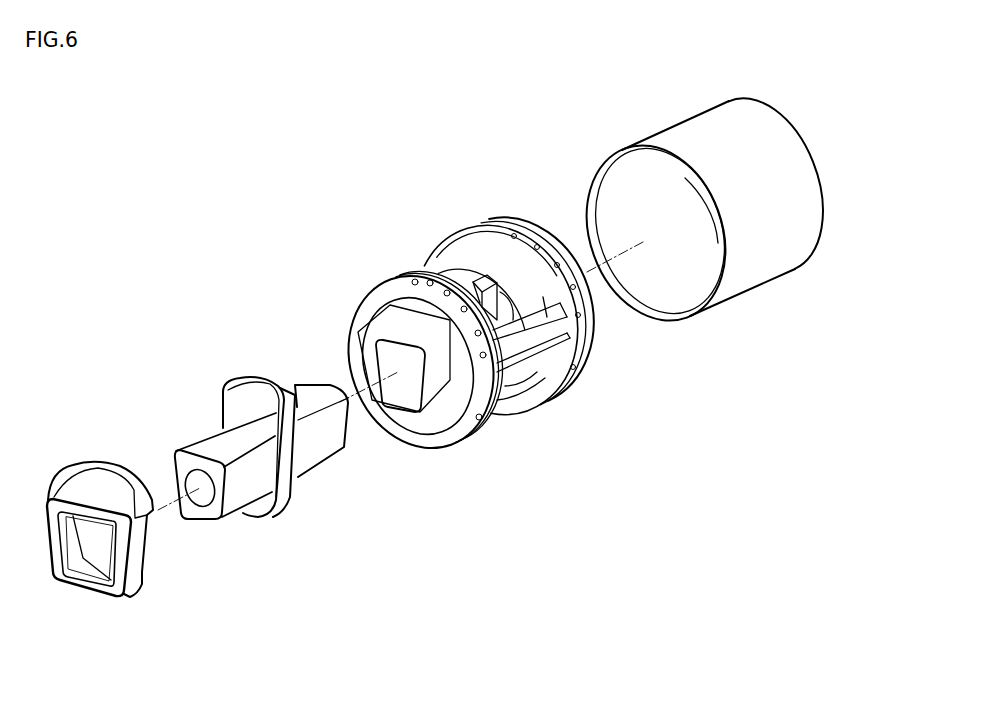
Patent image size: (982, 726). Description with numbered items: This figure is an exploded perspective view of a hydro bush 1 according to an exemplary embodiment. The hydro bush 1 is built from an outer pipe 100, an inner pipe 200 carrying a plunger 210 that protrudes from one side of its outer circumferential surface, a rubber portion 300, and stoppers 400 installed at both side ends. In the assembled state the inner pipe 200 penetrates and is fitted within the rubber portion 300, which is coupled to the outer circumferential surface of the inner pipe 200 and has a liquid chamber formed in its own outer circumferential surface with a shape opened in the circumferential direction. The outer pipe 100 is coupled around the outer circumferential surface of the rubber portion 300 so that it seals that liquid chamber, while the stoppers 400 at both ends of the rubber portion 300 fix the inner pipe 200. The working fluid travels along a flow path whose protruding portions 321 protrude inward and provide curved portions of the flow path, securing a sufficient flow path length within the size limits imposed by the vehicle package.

The hydro bush 1 is at (317, 227).
The outer pipe 100 is at (721, 329).
The inner pipe 200 is at (303, 525).
The plunger 210 is at (247, 398).
The rubber portion 300 is at (535, 427).
The protruding portion 321 is at (499, 236).
The stopper 400 is at (143, 613).